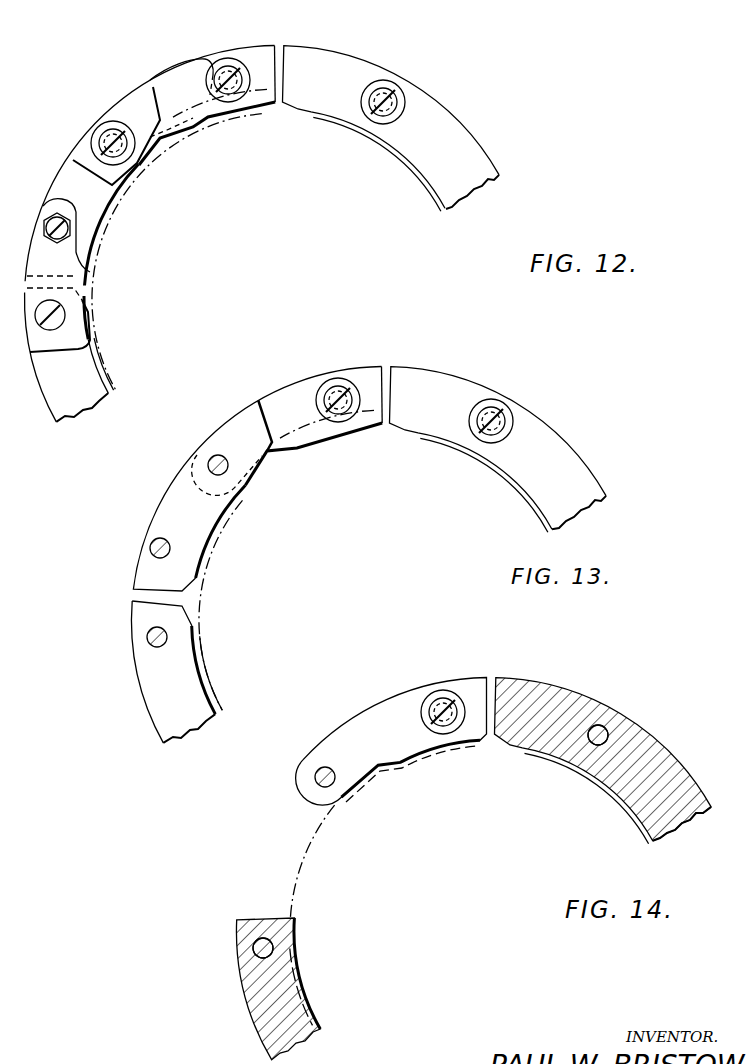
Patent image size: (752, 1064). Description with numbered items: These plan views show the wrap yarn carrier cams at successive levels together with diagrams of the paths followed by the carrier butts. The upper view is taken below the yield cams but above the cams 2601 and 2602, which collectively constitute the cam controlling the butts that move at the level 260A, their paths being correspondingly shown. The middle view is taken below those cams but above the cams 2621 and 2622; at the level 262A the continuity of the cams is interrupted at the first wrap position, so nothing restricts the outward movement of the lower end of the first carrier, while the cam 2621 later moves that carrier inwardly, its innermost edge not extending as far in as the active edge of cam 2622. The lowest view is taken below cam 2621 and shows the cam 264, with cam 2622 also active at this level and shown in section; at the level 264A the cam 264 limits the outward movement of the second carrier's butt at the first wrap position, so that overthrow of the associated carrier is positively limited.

In FIG. 12, the cam 2601 is at (205, 130).
In FIG. 12, the cam 2602 is at (68, 250).
In FIG. 12, the butt path level 260A is at (388, 166).
In FIG. 13, the cam 2621 is at (202, 528).
In FIG. 13, the cam 2622 is at (188, 665).
In FIG. 14, the cam 2622 is at (300, 992).
In FIG. 13, the butt path level 262A is at (483, 470).
In FIG. 14, the cam 264 is at (417, 742).
In FIG. 14, the butt path level 264A is at (558, 767).